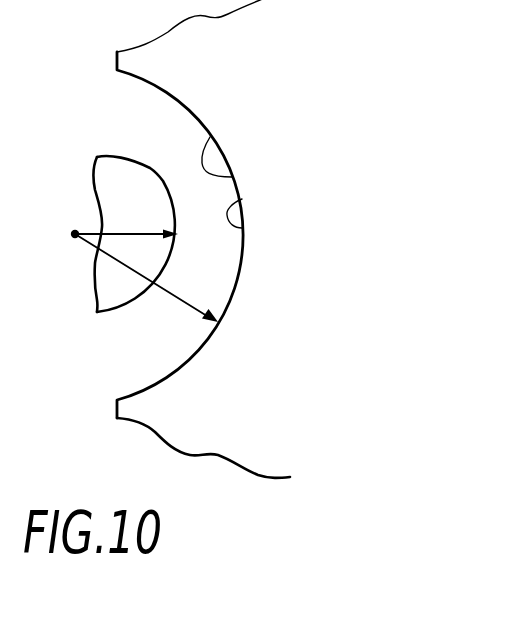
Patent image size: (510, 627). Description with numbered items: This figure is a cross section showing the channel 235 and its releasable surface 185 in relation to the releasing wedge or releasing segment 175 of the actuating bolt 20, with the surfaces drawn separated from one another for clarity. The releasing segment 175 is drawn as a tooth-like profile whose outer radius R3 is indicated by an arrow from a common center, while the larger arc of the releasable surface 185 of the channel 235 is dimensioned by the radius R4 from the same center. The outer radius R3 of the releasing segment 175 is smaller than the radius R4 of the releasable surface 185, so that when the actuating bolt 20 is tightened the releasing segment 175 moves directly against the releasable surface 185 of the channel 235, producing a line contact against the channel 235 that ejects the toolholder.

The actuating bolt 20 is at (112, 205).
The releasing segment 175 is at (173, 205).
The releasable surface 185 is at (242, 199).
The channel 235 is at (210, 137).
The outer radius of the releasing segment R3 is at (140, 232).
The radius of the releasable surface R4 is at (182, 297).